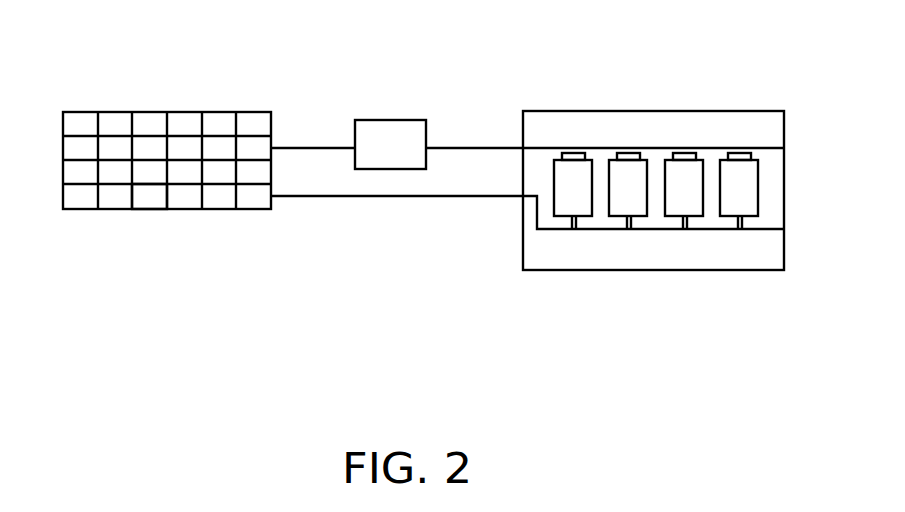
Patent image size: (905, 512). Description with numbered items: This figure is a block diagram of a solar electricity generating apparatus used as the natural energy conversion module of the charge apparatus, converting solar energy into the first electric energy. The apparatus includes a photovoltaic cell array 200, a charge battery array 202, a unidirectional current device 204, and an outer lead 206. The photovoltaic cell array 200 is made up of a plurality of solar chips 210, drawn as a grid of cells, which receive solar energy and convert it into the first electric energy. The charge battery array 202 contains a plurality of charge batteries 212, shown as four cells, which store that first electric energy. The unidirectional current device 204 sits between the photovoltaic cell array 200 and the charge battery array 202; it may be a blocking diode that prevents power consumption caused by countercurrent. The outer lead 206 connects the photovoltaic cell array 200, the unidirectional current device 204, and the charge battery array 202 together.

The photovoltaic cell array 200 is at (149, 112).
The charge battery array 202 is at (628, 108).
The unidirectional current device 204 is at (390, 120).
The outer lead 206 is at (300, 148).
The solar chip 210 is at (148, 197).
The charge battery 212 is at (732, 207).